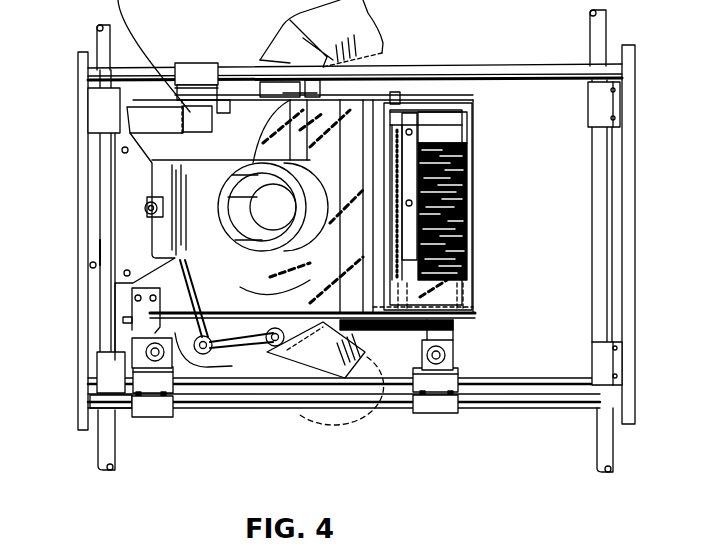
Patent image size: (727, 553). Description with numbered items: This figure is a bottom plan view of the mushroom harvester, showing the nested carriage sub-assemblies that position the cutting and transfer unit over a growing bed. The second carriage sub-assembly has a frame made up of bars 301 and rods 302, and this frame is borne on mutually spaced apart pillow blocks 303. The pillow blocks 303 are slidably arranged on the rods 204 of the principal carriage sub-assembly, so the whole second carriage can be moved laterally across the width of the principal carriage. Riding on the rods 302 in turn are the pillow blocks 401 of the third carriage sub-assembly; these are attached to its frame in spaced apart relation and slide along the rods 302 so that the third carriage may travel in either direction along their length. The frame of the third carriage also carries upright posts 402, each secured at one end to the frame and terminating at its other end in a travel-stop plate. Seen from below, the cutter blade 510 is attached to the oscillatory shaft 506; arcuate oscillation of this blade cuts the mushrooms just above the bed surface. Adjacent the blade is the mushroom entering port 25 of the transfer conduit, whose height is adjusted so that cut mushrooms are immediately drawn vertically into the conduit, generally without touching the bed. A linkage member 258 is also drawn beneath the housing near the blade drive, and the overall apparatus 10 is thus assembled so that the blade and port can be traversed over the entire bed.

The cartridge assembly 10 is at (488, 197).
The mushroom entering port 25 is at (246, 186).
The rods 204 is at (600, 30).
The lever arm 258 is at (275, 291).
The bars 301 is at (80, 205).
The rods 302 is at (541, 43).
The pillow blocks 303 is at (103, 110).
The pillow blocks 401 is at (195, 116).
The upright posts 402 is at (98, 353).
The oscillatory shaft 506 is at (146, 212).
The cutter blade 510 is at (100, 253).